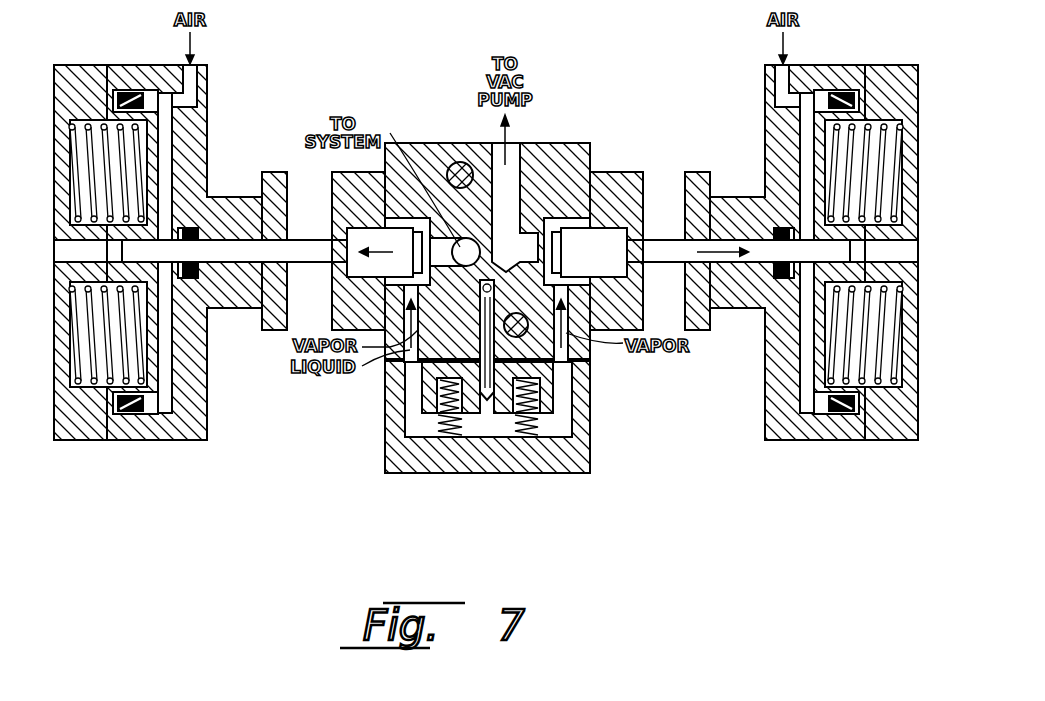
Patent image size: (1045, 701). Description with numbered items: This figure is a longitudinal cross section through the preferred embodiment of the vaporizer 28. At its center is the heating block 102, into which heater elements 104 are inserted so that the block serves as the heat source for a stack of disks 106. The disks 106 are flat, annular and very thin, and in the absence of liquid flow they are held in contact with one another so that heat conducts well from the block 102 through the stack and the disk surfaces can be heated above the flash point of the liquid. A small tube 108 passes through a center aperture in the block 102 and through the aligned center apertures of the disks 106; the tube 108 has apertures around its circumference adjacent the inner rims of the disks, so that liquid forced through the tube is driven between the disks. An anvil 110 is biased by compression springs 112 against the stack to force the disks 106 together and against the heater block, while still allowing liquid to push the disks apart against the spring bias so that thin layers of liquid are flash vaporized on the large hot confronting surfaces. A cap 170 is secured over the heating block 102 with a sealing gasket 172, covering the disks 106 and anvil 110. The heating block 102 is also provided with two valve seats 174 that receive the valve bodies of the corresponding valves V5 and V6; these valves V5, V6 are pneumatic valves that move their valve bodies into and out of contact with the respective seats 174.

The vaporizer 28 is at (406, 480).
The heating block 102 is at (570, 152).
The heater elements 104 is at (454, 163).
The disks 106 is at (481, 396).
The tube 108 is at (562, 350).
The anvil 110 is at (546, 389).
The compression springs 112 is at (524, 422).
The cap 170 is at (550, 475).
The sealing gasket 172 is at (386, 367).
The valve seats 174 is at (428, 224).
The valve V5 is at (84, 440).
The valve V6 is at (872, 440).